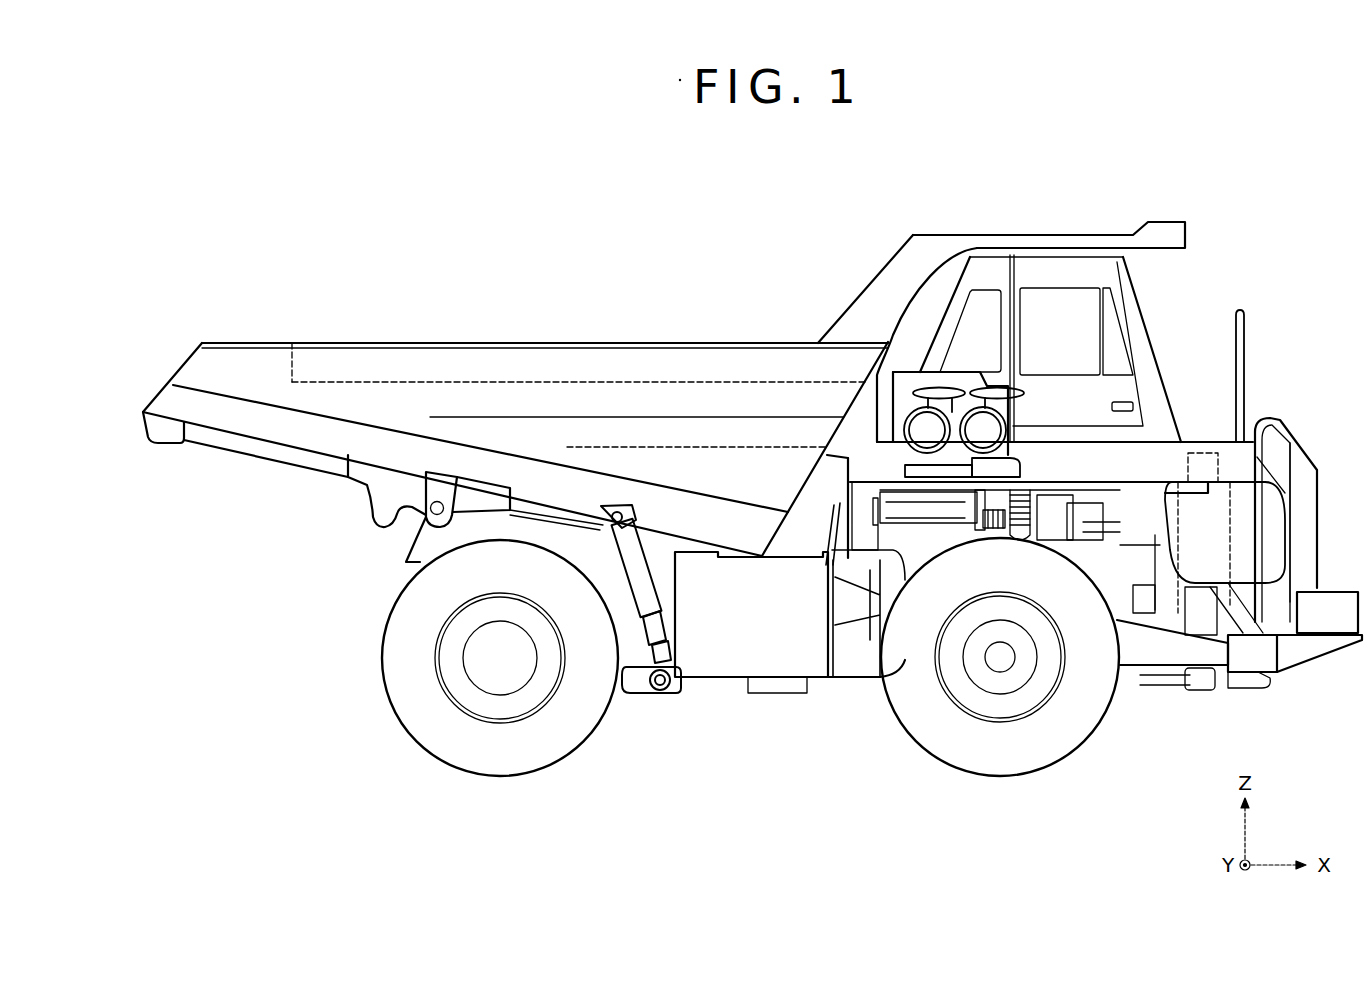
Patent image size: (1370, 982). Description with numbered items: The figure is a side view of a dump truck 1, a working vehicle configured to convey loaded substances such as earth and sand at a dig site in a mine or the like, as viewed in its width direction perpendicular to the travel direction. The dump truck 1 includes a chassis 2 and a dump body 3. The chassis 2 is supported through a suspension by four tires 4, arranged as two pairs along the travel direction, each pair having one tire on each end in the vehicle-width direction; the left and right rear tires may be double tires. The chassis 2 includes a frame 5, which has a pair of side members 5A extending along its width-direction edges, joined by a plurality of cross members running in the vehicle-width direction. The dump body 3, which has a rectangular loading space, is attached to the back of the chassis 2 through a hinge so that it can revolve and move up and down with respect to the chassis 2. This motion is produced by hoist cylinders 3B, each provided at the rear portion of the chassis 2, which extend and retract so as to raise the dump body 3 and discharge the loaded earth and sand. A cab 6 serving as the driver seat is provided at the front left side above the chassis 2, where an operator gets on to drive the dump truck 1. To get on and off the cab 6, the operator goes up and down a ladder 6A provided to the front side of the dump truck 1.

The dump truck 1 is at (1264, 214).
The chassis 2 is at (1210, 653).
The dump body 3 is at (563, 360).
The hoist cylinder 3B is at (650, 623).
The tire 4 is at (568, 733).
The frame 5 is at (1157, 652).
The side member 5A is at (855, 612).
The cab 6 is at (1133, 313).
The ladder 6A is at (1283, 422).